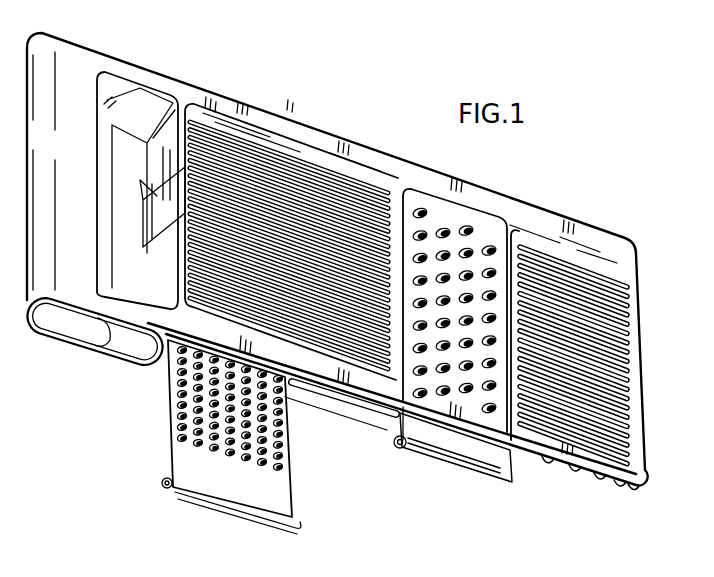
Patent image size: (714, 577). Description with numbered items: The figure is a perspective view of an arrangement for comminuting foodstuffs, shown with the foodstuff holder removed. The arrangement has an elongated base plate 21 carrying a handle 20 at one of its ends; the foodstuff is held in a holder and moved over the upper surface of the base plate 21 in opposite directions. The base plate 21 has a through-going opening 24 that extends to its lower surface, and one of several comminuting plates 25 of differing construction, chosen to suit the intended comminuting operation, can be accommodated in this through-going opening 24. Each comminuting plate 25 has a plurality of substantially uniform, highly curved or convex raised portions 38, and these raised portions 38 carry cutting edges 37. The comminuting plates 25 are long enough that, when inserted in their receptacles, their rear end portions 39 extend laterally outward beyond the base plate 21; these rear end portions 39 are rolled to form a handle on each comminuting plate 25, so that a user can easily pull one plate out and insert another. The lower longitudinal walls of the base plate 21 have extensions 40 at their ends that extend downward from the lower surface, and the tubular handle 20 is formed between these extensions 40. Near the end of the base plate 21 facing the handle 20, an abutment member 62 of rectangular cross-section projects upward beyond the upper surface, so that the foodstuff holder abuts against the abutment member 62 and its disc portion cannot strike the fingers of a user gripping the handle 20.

The handle 20 is at (75, 282).
The base plate 21 is at (252, 168).
The through-going opening 24 is at (510, 265).
The comminuting plate 25 is at (432, 208).
The cutting edge 37 is at (500, 360).
The raised portion 38 is at (285, 432).
The rear end portion 39 is at (215, 477).
The extension 40 is at (143, 95).
The abutment member 62 is at (150, 193).